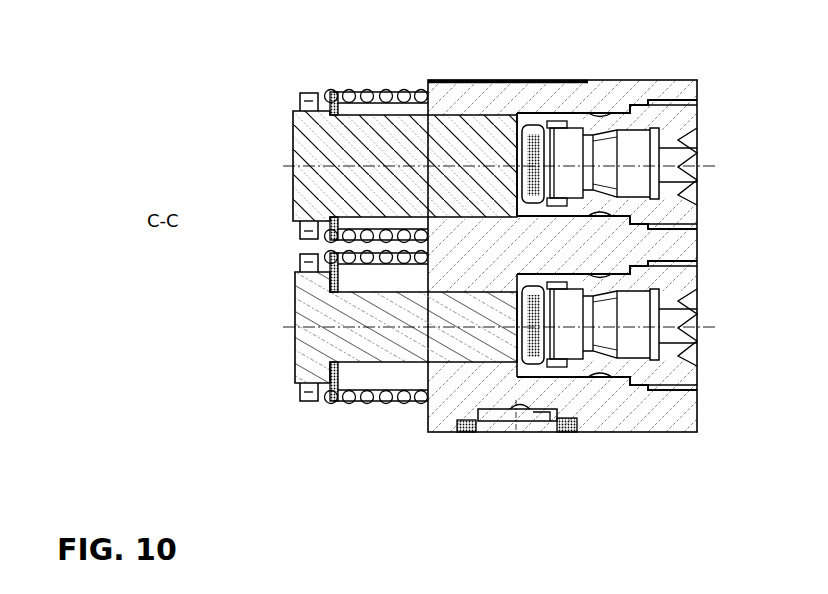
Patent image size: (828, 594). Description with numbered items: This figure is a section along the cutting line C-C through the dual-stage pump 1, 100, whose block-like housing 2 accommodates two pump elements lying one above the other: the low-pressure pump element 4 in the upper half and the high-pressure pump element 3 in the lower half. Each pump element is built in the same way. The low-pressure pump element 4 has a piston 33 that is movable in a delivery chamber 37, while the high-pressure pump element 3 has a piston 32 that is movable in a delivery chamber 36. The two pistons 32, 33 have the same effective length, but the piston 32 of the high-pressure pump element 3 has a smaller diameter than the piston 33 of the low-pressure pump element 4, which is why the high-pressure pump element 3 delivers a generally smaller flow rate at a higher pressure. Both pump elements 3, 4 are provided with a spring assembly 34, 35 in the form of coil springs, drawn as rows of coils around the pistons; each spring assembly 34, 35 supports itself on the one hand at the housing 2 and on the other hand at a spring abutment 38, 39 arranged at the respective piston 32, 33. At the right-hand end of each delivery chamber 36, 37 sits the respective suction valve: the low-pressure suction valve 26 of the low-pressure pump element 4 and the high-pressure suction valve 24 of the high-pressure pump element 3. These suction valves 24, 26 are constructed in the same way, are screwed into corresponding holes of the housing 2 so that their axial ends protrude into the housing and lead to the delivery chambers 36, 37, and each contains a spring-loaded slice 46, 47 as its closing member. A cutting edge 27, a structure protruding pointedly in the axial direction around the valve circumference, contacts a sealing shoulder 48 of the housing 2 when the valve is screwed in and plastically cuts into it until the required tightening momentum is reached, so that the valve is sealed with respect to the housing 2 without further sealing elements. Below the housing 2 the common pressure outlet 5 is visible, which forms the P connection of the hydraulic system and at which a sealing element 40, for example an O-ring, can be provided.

The dual-stage pump 1 is at (412, 260).
The dual-stage pump 100 is at (412, 260).
The housing 2 is at (460, 82).
The high-pressure pump element 3 is at (489, 369).
The low-pressure pump element 4 is at (489, 129).
The pressure outlet 5 is at (501, 425).
The high-pressure suction valve 24 is at (686, 373).
The low-pressure suction valve 26 is at (673, 127).
The cutting edge 27 is at (628, 104).
The sealing shoulder 48 is at (633, 390).
The piston 32 is at (307, 306).
The piston 33 is at (307, 150).
The spring assembly 34 is at (352, 403).
The spring assembly 35 is at (350, 90).
The delivery chamber 36 is at (517, 363).
The delivery chamber 37 is at (526, 125).
The spring abutment 38 is at (312, 401).
The spring abutment 39 is at (312, 90).
The sealing element 40 is at (467, 436).
The spring-loaded slice 46 is at (553, 354).
The spring-loaded slice 47 is at (547, 122).